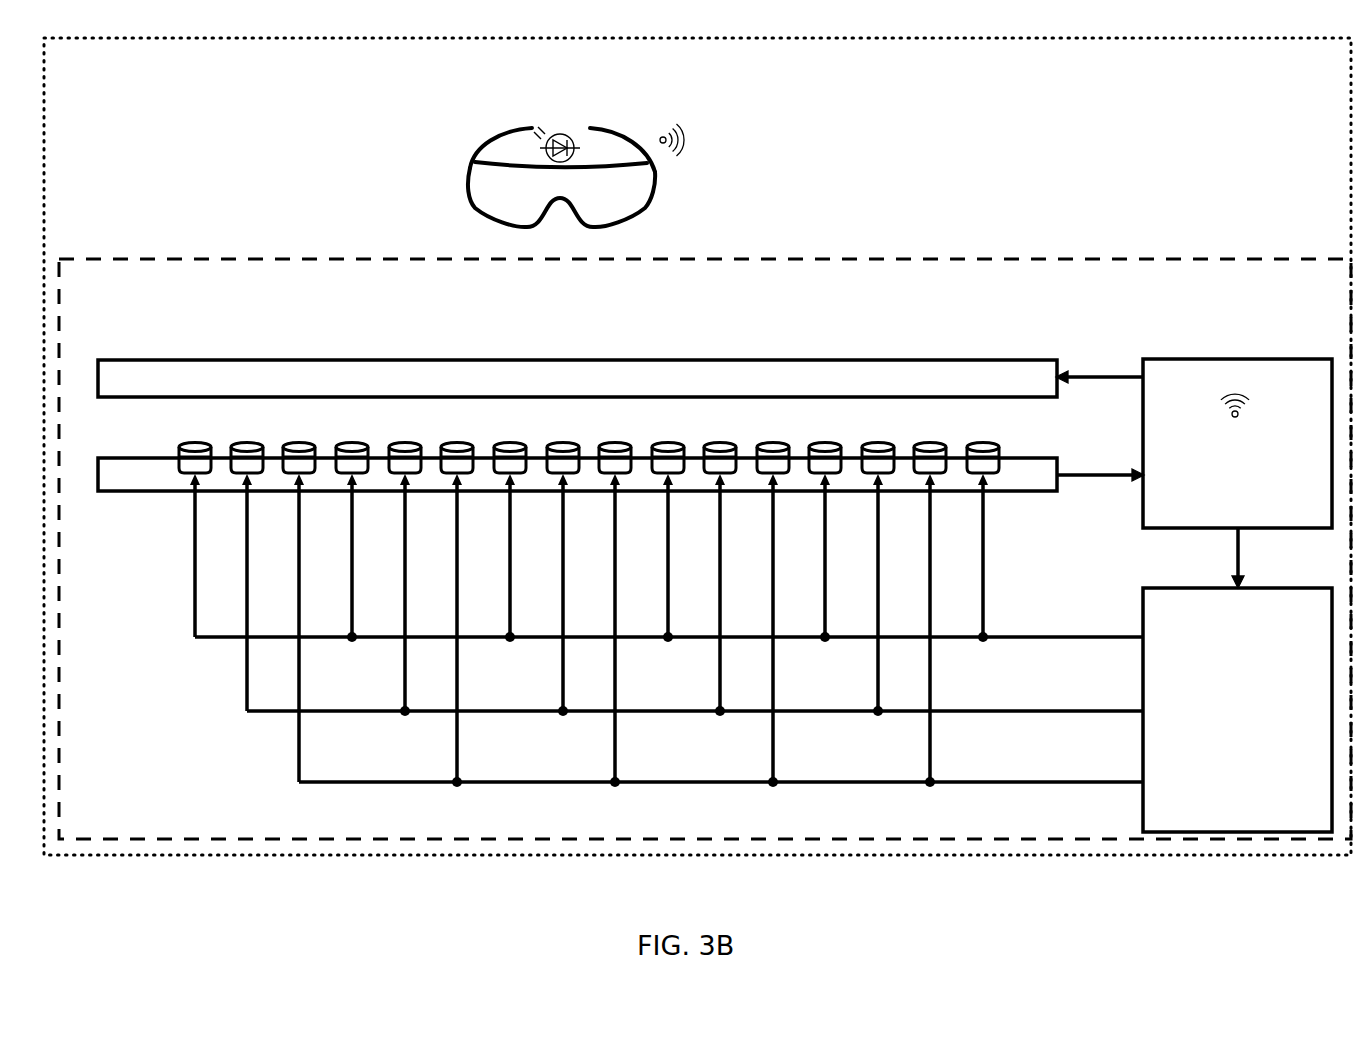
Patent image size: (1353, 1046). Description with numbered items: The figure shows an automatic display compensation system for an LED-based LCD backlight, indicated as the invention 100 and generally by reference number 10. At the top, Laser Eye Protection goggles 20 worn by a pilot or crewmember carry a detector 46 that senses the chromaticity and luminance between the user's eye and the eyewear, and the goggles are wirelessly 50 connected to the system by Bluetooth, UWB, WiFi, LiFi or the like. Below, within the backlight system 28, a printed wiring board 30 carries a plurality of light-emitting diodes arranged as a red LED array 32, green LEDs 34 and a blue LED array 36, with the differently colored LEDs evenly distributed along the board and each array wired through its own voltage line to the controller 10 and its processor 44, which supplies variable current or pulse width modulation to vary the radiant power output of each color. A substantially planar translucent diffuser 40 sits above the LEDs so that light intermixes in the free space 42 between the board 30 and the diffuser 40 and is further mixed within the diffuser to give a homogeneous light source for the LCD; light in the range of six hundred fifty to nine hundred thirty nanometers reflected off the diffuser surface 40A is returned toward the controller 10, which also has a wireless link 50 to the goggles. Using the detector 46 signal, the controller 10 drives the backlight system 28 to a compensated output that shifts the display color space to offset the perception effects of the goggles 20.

The controller 10 is at (1228, 357).
The Laser Eye Protection goggles 20 is at (480, 140).
The backlight system 28 is at (912, 243).
The printed wiring board 30 is at (370, 797).
The red LED array 32 is at (188, 437).
The green LEDs 34 is at (408, 434).
The blue LED array 36 is at (613, 434).
The diffuser 40 is at (235, 350).
The diffuser surface 40A is at (1065, 322).
The free space 42 is at (100, 425).
The processor 44 is at (1304, 811).
The detector 46 is at (557, 126).
The wireless connection 50 is at (700, 160).
The invention 100 is at (1057, 866).